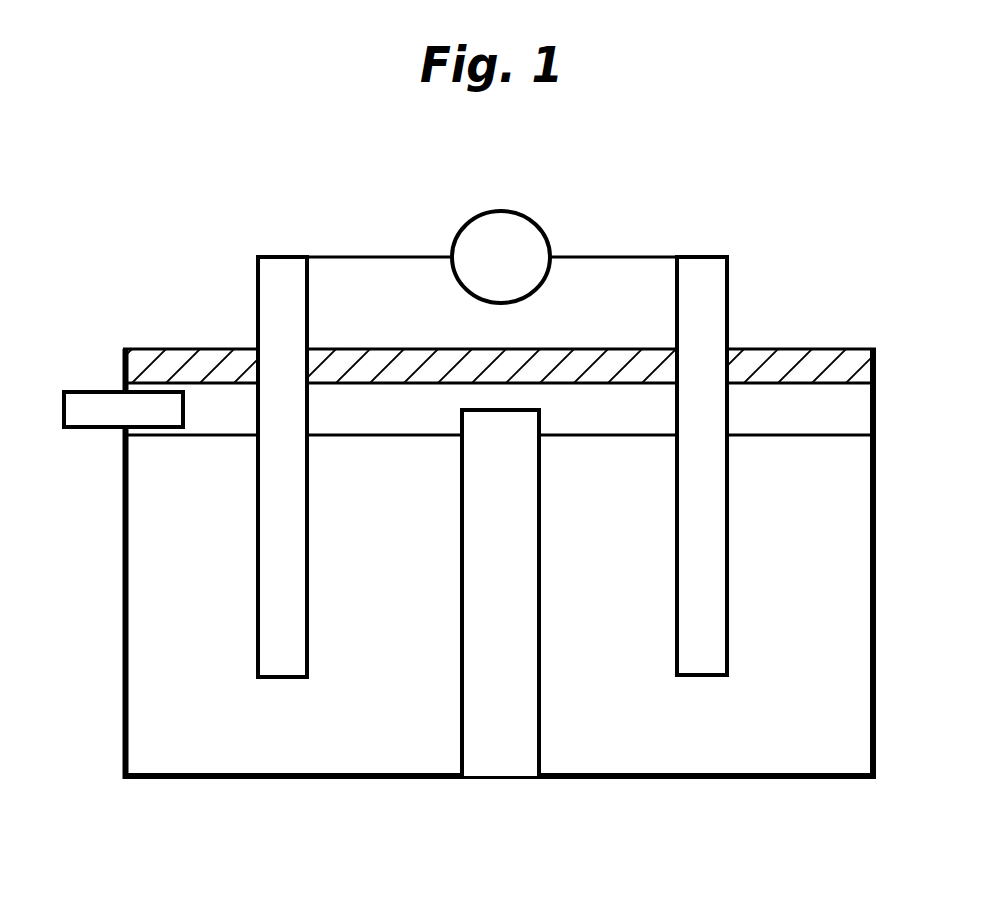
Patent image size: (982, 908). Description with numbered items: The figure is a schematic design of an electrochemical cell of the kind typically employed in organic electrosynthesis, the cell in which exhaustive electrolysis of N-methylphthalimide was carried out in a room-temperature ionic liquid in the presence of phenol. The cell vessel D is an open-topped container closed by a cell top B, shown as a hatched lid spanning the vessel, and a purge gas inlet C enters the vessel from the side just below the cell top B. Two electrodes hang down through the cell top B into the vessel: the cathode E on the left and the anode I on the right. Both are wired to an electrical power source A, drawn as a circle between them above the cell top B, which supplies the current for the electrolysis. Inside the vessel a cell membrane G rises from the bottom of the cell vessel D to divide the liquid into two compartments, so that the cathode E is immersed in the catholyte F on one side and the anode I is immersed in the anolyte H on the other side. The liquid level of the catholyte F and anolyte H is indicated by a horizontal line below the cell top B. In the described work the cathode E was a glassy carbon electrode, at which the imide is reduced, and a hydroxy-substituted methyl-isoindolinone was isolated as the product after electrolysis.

The electrical power source A is at (492, 257).
The cell top B is at (172, 360).
The purge gas inlet C is at (76, 389).
The cell vessel D is at (123, 643).
The cathode E is at (283, 287).
The catholyte F is at (399, 713).
The cell membrane G is at (502, 752).
The anolyte H is at (632, 712).
The anode I is at (699, 287).